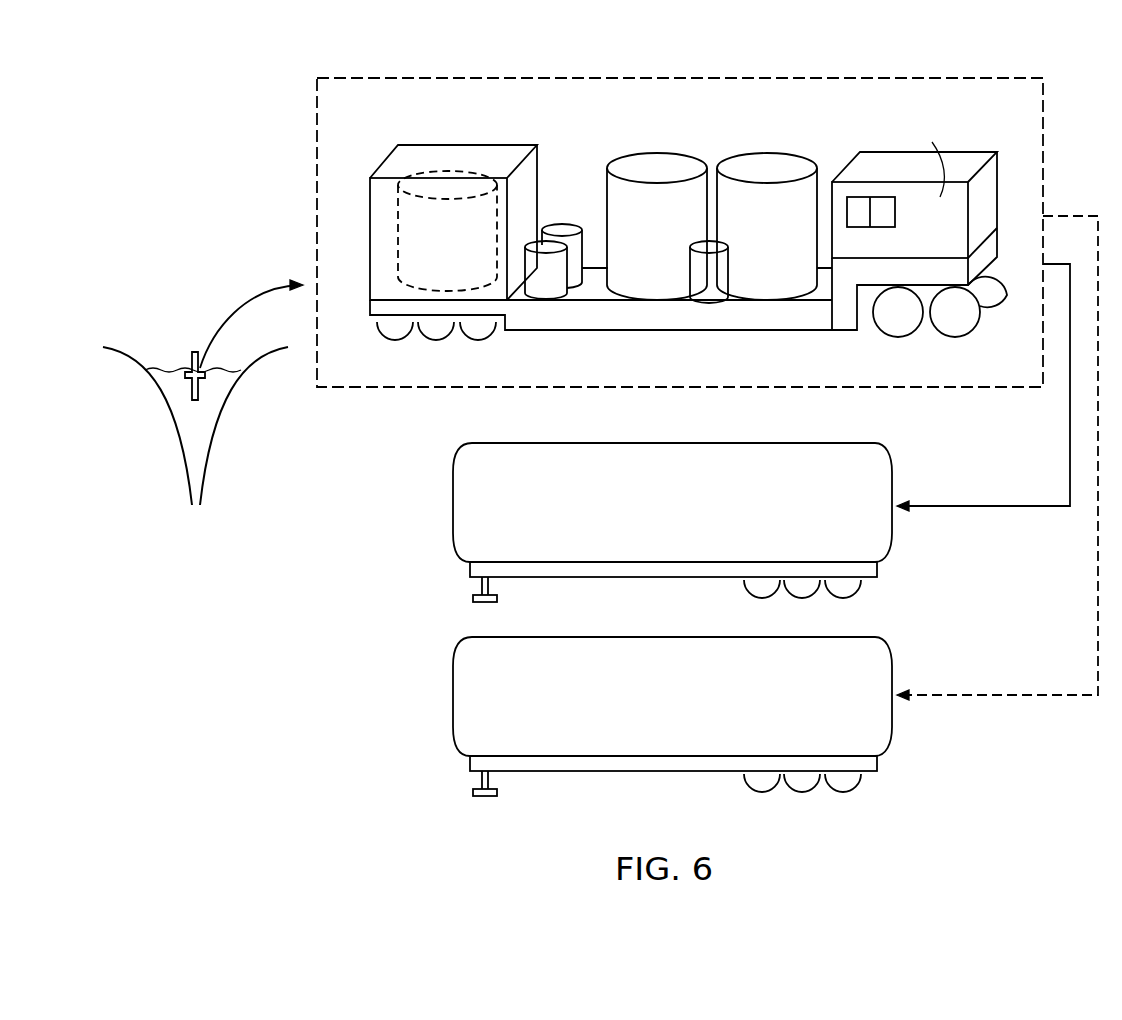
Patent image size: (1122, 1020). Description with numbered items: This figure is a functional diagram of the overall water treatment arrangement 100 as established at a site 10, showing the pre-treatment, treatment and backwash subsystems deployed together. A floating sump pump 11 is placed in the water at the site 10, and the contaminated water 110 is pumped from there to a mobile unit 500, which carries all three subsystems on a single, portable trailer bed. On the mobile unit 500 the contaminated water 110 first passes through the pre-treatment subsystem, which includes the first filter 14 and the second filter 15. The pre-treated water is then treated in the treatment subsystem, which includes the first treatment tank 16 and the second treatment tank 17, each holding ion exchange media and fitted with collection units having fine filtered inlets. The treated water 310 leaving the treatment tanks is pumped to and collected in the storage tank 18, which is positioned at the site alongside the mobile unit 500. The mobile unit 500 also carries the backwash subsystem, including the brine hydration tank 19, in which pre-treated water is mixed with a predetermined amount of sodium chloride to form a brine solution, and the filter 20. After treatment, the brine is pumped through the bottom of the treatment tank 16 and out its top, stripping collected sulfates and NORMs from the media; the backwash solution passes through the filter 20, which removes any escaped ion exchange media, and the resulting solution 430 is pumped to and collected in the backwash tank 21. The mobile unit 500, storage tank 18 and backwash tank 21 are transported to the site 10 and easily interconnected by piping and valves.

The water treatment system 100 is at (245, 97).
The site 10 is at (170, 371).
The floating sump pump 11 is at (188, 387).
The contaminated water 110 is at (222, 312).
The mobile unit 500 is at (722, 136).
The brine hydration tank 19 is at (447, 231).
The first filter 14 is at (543, 290).
The second filter 15 is at (578, 272).
The first treatment tank 16 is at (668, 239).
The second treatment tank 17 is at (778, 239).
The filter 20 is at (702, 295).
The storage tank 18 is at (687, 529).
The backwash tank 21 is at (687, 723).
The treated water 310 is at (1070, 442).
The solution 430 is at (1098, 596).